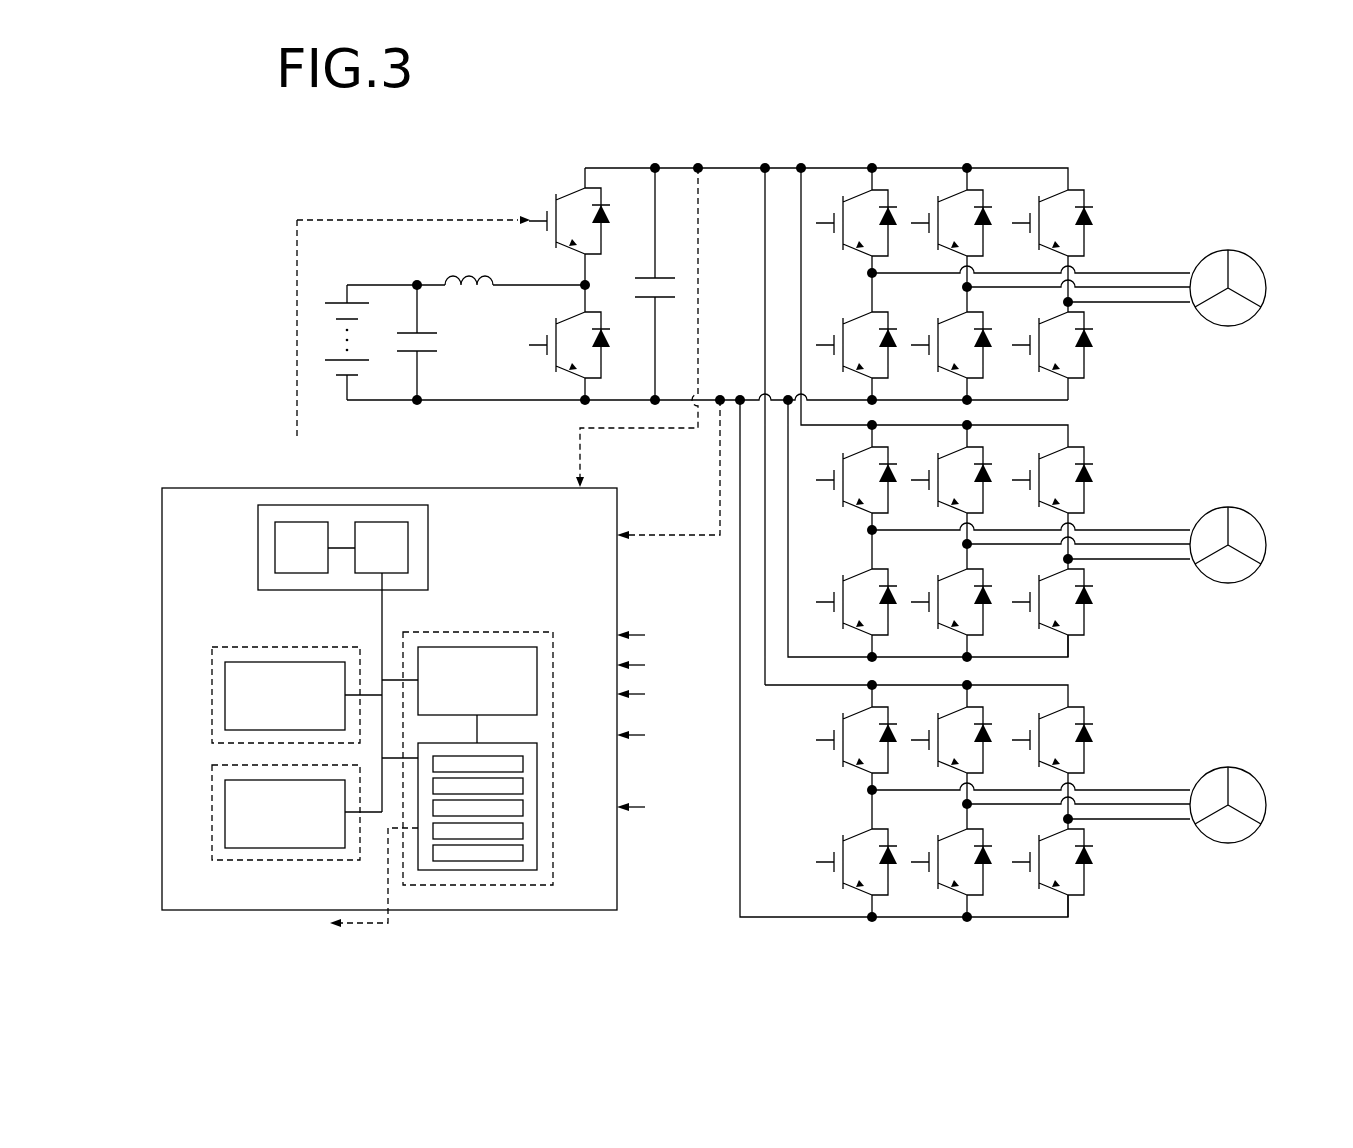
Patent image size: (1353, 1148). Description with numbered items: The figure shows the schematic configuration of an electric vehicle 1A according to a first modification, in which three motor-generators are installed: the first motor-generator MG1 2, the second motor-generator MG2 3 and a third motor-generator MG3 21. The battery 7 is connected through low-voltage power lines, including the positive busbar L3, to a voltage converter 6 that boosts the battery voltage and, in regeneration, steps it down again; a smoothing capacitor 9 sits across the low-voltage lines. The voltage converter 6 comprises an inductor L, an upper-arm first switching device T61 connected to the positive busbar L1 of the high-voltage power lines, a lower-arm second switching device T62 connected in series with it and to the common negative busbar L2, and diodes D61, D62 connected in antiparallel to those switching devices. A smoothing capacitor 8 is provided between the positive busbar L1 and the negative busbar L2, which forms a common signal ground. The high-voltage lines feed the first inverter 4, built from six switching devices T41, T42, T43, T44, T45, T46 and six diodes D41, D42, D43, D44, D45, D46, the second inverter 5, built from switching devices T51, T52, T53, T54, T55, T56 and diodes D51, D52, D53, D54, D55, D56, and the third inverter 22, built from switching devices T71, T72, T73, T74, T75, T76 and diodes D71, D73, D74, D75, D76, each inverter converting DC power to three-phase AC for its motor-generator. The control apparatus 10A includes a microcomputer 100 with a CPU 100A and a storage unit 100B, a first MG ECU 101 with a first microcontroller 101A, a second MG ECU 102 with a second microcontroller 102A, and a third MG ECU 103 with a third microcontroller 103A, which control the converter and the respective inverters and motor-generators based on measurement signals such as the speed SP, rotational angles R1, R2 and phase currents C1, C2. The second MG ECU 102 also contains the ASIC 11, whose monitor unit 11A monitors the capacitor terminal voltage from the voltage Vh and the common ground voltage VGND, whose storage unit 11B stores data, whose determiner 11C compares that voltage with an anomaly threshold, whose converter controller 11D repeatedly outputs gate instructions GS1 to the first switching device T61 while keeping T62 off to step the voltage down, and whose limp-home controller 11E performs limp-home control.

The electric vehicle 1A is at (1098, 97).
The voltage converter 6 is at (660, 120).
The positive busbar L1 is at (729, 166).
The negative busbar L2 is at (468, 402).
The positive busbar L3 is at (377, 284).
The inductor L is at (491, 280).
The battery 7 is at (335, 300).
The smoothing capacitor 8 is at (666, 278).
The smoothing capacitor 9 is at (437, 352).
The first switching device T61 is at (548, 218).
The second switching device T62 is at (547, 343).
The diode D61 is at (628, 205).
The diode D62 is at (628, 328).
The gate instruction GS1 is at (402, 343).
The voltage Vh is at (622, 327).
The common ground voltage VGND is at (668, 469).
The second inverter 5 is at (1112, 158).
The first inverter 4 is at (1138, 420).
The third inverter 22 is at (1126, 683).
The first motor-generator MG1 is at (1228, 533).
The second motor-generator MG2 is at (1228, 276).
The third motor-generator MG3 is at (1228, 793).
The first motor-generator 2 is at (1266, 547).
The second motor-generator 3 is at (1266, 290).
The third motor-generator 21 is at (1266, 807).
The switching device T41 is at (822, 482).
The switching device T42 is at (830, 600).
The switching device T43 is at (917, 482).
The switching device T44 is at (917, 604).
The switching device T45 is at (1018, 482).
The switching device T46 is at (1018, 604).
The diode D41 is at (897, 473).
The diode D42 is at (912, 579).
The diode D43 is at (992, 473).
The diode D44 is at (992, 595).
The diode D45 is at (1093, 479).
The diode D46 is at (1098, 599).
The switching device T51 is at (822, 225).
The switching device T52 is at (830, 343).
The switching device T53 is at (917, 225).
The switching device T54 is at (917, 347).
The switching device T55 is at (1018, 225).
The switching device T56 is at (1018, 347).
The diode D51 is at (897, 216).
The diode D52 is at (912, 322).
The diode D53 is at (992, 216).
The diode D54 is at (992, 338).
The diode D55 is at (1093, 222).
The diode D56 is at (1098, 342).
The switching device T71 is at (822, 742).
The switching device T72 is at (830, 860).
The switching device T73 is at (917, 742).
The switching device T74 is at (917, 864).
The switching device T75 is at (1018, 742).
The switching device T76 is at (1018, 864).
The diode D71 is at (897, 733).
The diode D73 is at (992, 733).
The diode D74 is at (992, 855).
The diode D75 is at (1093, 739).
The diode D76 is at (1098, 859).
The control apparatus 10A is at (160, 822).
The microcomputer 100 is at (428, 510).
The CPU 100A is at (420, 550).
The storage unit 100B is at (275, 548).
The first MG electronic control unit 101 is at (212, 677).
The first microcontroller 101A is at (262, 662).
The second MG electronic control unit 102 is at (450, 632).
The second microcontroller 102A is at (537, 670).
The third MG electronic control unit 103 is at (212, 800).
The third microcontroller 103A is at (262, 848).
The application specific integrated circuit 11 is at (520, 743).
The application specific integrated circuit ASIC is at (582, 788).
The monitor unit 11A is at (523, 764).
The storage unit 11B is at (523, 786).
The determiner 11C is at (523, 808).
The converter controller 11D is at (523, 830).
The limp-home controller 11E is at (523, 852).
The phase current C1 is at (670, 636).
The phase current C2 is at (651, 666).
The rotational angle R1 is at (651, 695).
The rotational angle R2 is at (670, 736).
The speed SP is at (650, 808).